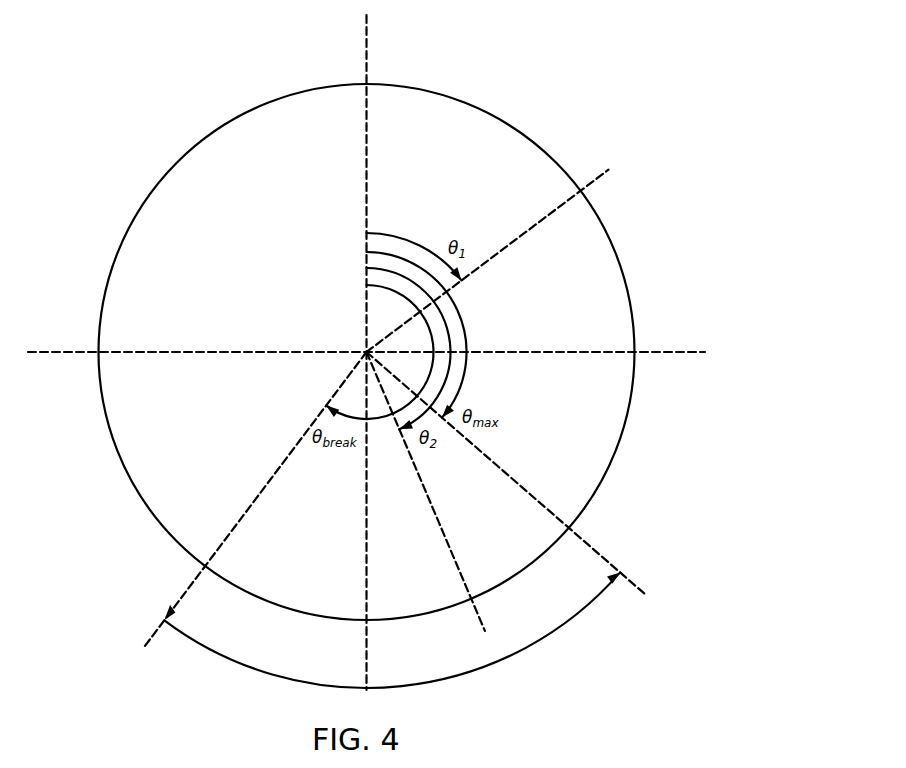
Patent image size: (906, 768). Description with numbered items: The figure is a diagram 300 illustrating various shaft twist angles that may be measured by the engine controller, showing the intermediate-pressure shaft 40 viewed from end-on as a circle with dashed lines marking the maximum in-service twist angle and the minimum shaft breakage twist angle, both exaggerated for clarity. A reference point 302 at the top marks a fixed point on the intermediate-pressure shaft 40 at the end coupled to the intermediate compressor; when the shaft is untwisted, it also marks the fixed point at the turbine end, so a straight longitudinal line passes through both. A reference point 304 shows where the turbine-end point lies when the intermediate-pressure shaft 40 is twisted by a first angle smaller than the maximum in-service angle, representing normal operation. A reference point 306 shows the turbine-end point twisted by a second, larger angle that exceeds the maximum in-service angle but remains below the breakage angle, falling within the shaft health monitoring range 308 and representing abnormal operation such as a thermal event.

The diagram 300 is at (750, 80).
The intermediate-pressure shaft 40 is at (141, 207).
The reference point 302 is at (366, 84).
The reference point 304 is at (581, 189).
The reference point 306 is at (471, 604).
The shaft health monitoring range 308 is at (580, 612).